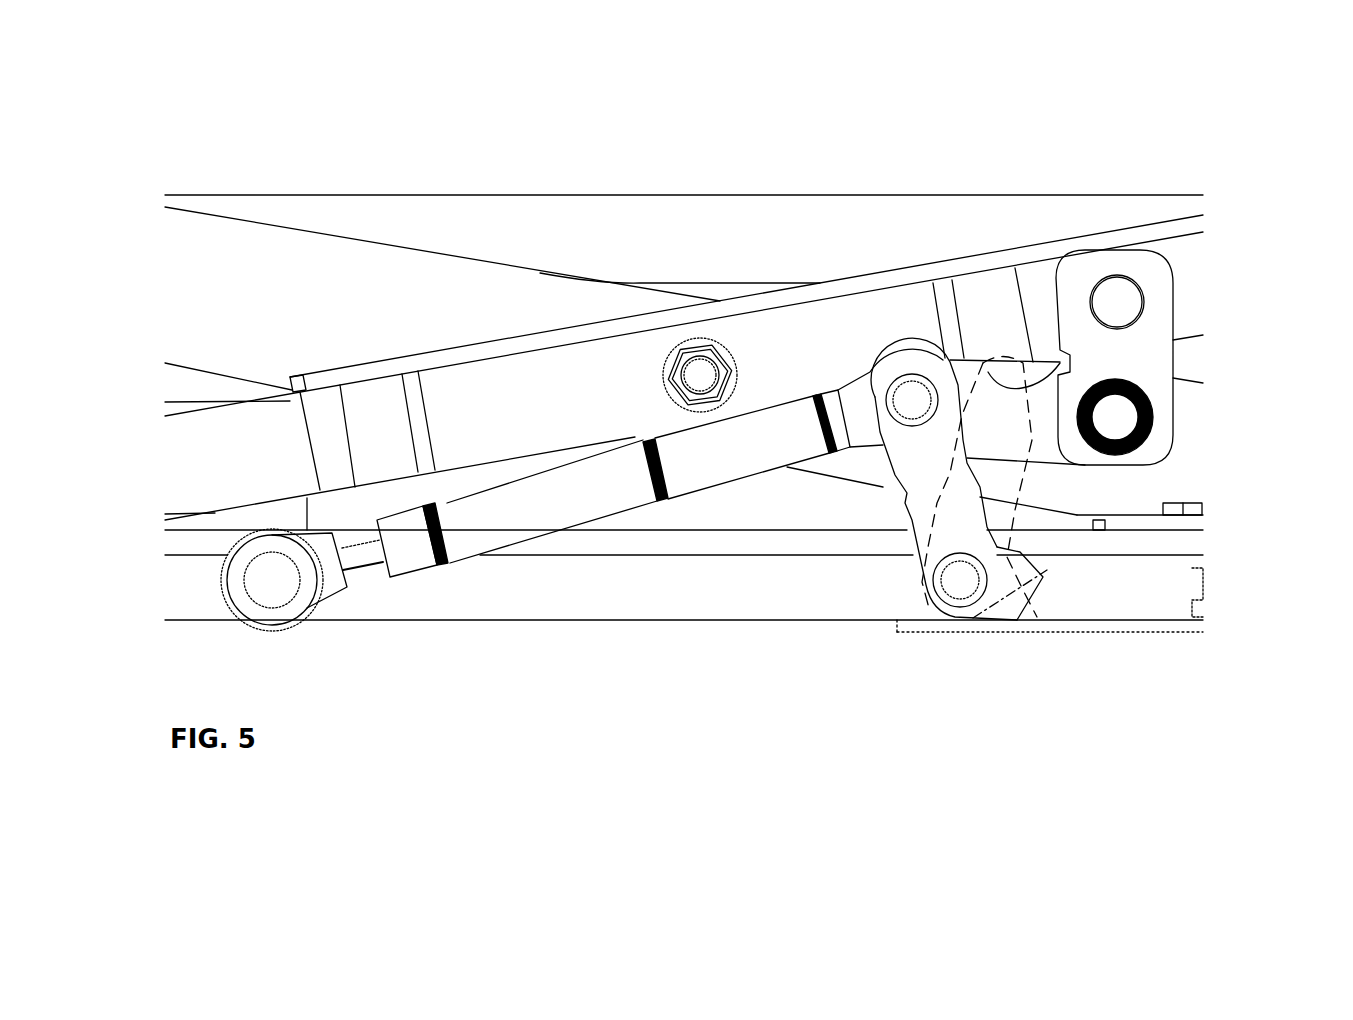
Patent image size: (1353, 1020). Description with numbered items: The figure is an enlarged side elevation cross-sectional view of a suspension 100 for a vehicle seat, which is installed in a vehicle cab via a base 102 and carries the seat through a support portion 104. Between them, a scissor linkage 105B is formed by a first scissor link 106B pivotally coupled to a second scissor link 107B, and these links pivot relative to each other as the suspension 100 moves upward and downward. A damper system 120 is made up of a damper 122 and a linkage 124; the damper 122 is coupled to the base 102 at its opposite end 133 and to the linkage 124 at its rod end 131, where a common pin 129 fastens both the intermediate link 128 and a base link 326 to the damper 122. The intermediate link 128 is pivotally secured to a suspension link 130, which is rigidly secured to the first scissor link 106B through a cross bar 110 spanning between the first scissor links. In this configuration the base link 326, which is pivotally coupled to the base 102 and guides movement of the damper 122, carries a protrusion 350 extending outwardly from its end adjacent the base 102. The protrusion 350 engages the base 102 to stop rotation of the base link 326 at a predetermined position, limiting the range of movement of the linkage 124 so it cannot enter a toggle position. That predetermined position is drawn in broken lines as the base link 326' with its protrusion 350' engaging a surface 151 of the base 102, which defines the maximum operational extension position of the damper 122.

The suspension 100 is at (185, 126).
The base 102 is at (380, 620).
The support portion 104 is at (733, 195).
The scissor linkage 105B is at (370, 202).
The first scissor link 106B is at (827, 352).
The second scissor link 107B is at (200, 298).
The cross bar 110 is at (1118, 300).
The damper system 120 is at (1075, 212).
The damper 122 is at (517, 520).
The linkage 124 is at (1088, 600).
The intermediate link 128 is at (1043, 453).
The common pin 129 is at (902, 355).
The suspension link 130 is at (1150, 355).
The rod end 131 is at (911, 398).
The opposite end 133 is at (267, 582).
The surface 151 is at (1137, 620).
The base link 326 is at (959, 533).
The base link in predetermined position 326' is at (1134, 562).
The protrusion 350 is at (1106, 637).
The protrusion in predetermined position 350' is at (1085, 668).